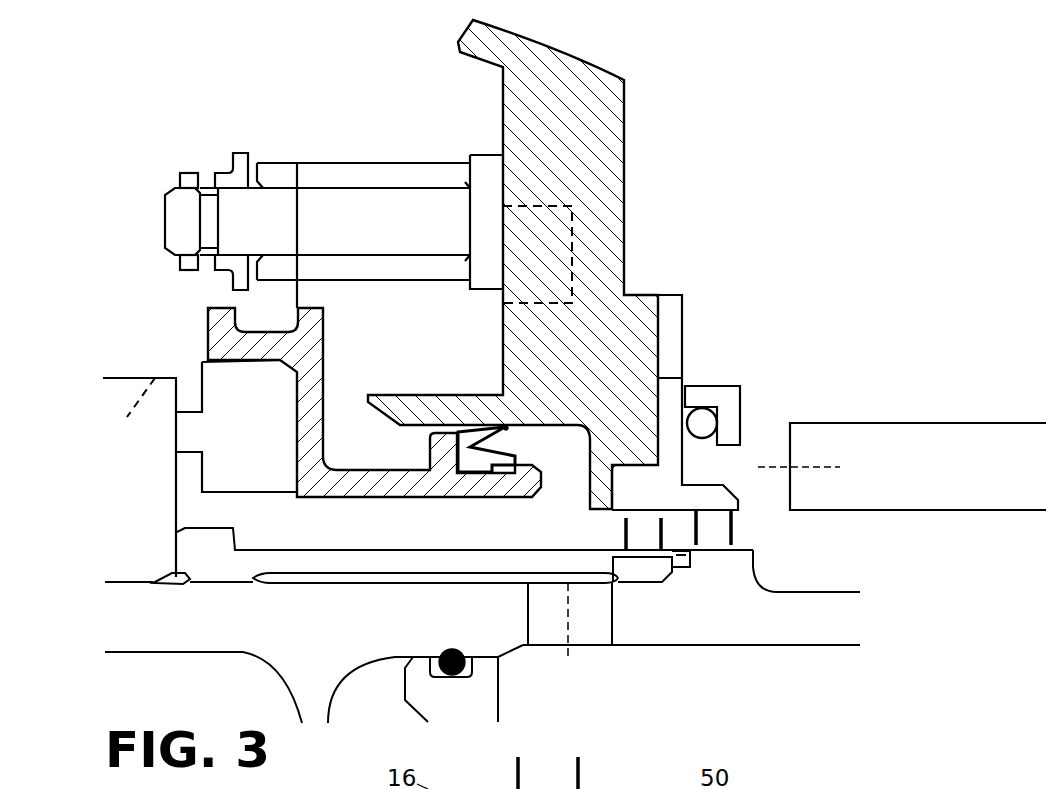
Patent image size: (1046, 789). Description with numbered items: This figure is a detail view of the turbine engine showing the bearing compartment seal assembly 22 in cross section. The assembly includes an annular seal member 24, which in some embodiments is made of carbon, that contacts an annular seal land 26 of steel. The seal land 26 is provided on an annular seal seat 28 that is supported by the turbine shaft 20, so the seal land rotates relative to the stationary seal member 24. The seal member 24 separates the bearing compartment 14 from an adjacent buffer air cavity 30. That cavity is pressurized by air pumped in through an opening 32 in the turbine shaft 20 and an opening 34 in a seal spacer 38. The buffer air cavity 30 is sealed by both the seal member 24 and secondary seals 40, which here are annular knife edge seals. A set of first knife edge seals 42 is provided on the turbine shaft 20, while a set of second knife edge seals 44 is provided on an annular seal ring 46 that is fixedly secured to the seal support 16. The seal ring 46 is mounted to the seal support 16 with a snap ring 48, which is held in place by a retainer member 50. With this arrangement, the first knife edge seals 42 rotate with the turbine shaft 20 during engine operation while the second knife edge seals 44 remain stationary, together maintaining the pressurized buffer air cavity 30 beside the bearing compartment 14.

The bearing compartment 14 is at (93, 250).
The seal support 16 is at (603, 200).
The turbine shaft 20 is at (830, 628).
The bearing compartment seal assembly 22 is at (190, 483).
The annular seal member 24 is at (180, 435).
The annular seal land 26 is at (178, 395).
The annular seal seat 28 is at (142, 543).
The buffer air cavity 30 is at (293, 530).
The opening 32 is at (587, 628).
The opening 34 is at (551, 557).
The seal spacer 38 is at (387, 560).
The secondary seals 40 is at (747, 525).
The first knife edge seals 42 is at (627, 530).
The second knife edge seals 44 is at (700, 530).
The annular seal ring 46 is at (698, 493).
The snap ring 48 is at (700, 417).
The retainer member 50 is at (730, 415).